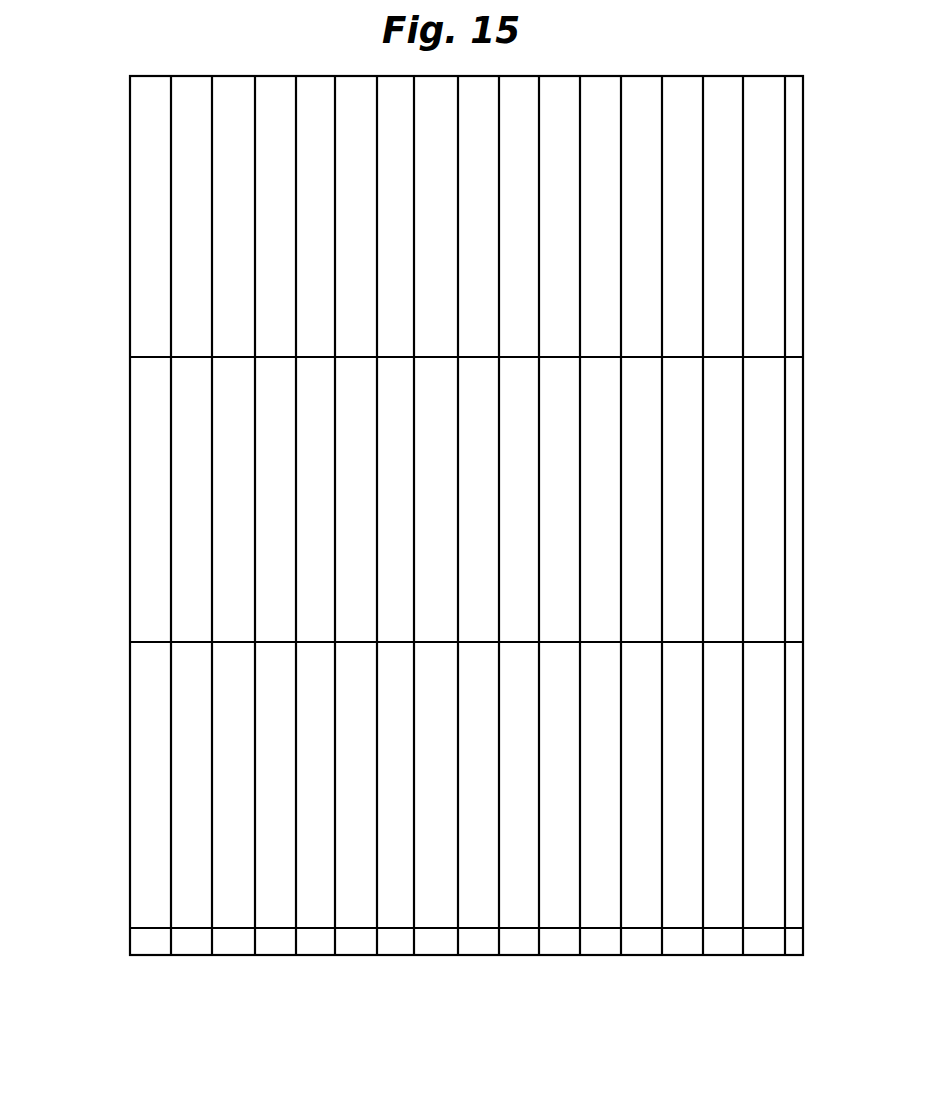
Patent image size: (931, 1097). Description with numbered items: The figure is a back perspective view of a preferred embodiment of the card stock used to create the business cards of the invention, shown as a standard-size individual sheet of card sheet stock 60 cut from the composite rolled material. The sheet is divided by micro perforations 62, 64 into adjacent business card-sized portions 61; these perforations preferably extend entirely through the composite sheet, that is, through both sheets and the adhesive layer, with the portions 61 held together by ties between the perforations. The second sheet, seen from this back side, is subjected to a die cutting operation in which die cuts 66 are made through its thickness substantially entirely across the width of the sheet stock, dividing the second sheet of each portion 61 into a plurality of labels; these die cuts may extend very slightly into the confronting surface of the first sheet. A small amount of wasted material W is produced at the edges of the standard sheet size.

The card sheet stock 60 is at (108, 664).
The business card-sized portion 61 is at (498, 515).
The micro perforation line 62 is at (295, 883).
The micro perforation line 64 is at (191, 641).
The die cut 66 is at (170, 413).
The wasted material W is at (792, 892).